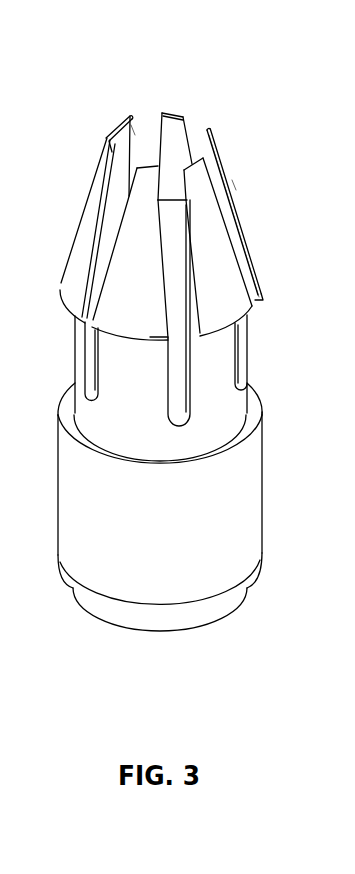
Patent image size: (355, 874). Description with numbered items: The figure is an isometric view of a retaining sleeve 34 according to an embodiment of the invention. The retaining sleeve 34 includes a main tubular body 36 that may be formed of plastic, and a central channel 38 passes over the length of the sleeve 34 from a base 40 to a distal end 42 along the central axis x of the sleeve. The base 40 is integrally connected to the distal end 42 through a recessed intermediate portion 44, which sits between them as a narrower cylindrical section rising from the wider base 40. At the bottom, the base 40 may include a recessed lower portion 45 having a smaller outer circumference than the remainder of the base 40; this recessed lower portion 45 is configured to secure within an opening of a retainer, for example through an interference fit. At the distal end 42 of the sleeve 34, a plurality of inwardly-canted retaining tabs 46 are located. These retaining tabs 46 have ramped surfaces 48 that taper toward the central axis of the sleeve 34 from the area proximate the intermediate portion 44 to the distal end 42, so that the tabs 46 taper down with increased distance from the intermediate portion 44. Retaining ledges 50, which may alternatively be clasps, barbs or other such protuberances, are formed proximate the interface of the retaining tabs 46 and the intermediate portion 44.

The retaining sleeve 34 is at (238, 181).
The main tubular body 36 is at (263, 505).
The central channel 38 is at (139, 127).
The base 40 is at (97, 577).
The distal end 42 is at (112, 128).
The recessed intermediate portion 44 is at (241, 408).
The recessed lower portion 45 is at (186, 620).
The inwardly-canted retaining tabs 46 is at (187, 117).
The ramped surfaces 48 is at (238, 218).
The retaining ledges 50 is at (68, 310).